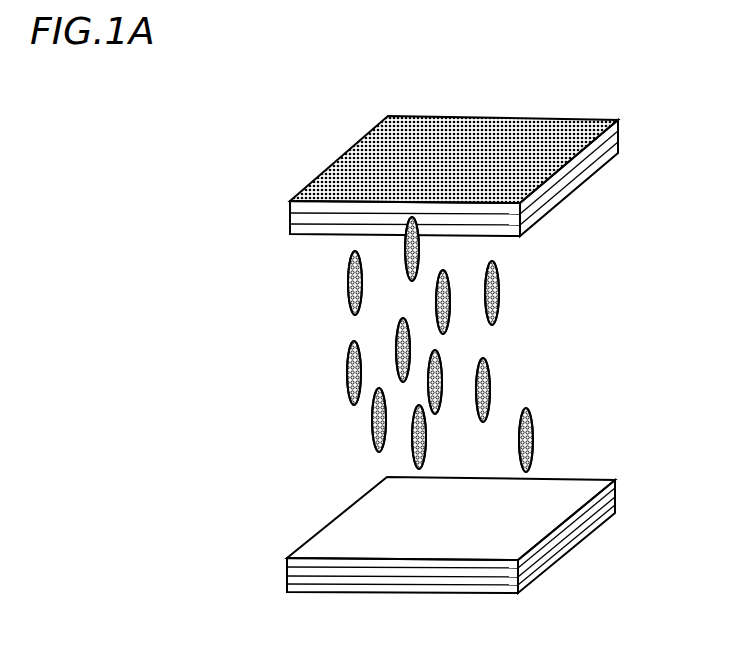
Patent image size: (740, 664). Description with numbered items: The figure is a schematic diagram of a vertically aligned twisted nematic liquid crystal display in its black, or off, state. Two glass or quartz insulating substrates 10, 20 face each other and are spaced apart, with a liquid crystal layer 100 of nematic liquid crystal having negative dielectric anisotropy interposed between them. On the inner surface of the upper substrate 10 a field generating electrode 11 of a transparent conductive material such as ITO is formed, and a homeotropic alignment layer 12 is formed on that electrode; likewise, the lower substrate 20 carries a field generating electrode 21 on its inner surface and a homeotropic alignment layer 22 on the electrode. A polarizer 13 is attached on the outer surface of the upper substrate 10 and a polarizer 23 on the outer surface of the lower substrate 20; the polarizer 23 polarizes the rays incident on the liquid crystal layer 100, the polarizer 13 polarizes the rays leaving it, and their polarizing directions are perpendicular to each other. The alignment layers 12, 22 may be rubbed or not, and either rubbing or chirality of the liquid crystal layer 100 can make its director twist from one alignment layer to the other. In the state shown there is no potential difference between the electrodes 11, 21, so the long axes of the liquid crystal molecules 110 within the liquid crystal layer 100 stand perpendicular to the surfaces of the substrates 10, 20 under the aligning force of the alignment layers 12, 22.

The liquid crystal layer 100 is at (271, 240).
The insulating substrate 10 is at (488, 159).
The field generating electrode 11 is at (598, 153).
The homeotropic alignment layer 12 is at (577, 179).
The polarizer 13 is at (567, 136).
The liquid crystal molecules 110 is at (493, 383).
The insulating substrate 20 is at (486, 510).
The field generating electrode 21 is at (613, 497).
The homeotropic alignment layer 22 is at (585, 493).
The polarizer 23 is at (588, 537).